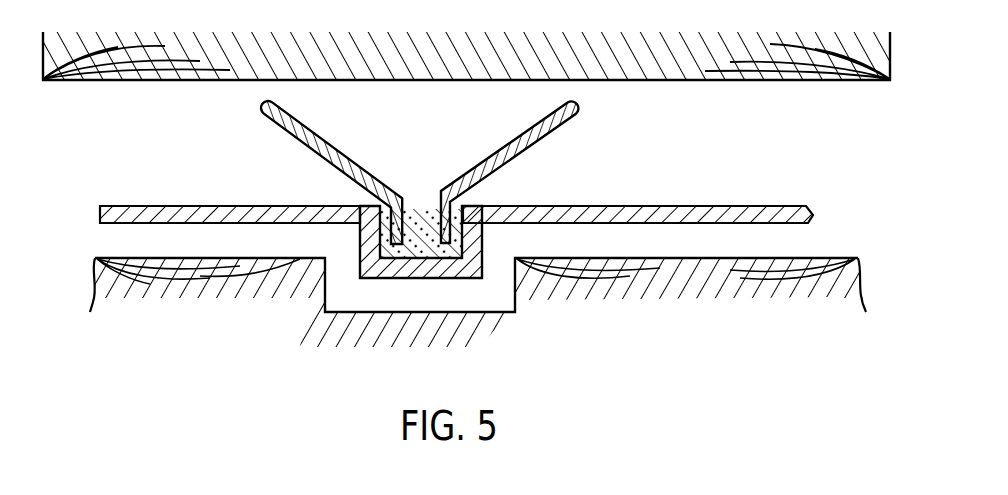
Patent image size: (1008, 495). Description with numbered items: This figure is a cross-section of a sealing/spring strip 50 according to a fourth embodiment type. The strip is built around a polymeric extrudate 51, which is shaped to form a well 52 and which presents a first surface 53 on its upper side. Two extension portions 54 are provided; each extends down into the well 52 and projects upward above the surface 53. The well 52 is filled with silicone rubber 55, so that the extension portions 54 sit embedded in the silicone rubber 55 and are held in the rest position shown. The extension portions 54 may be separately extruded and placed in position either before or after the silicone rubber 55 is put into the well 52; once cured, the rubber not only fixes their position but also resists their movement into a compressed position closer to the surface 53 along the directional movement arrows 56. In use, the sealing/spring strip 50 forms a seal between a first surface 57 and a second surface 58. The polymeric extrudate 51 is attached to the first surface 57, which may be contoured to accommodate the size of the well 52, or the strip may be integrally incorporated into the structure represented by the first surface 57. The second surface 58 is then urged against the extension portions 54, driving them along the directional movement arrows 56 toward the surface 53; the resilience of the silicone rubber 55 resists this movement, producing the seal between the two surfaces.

The sealing/spring strip 50 is at (714, 160).
The polymeric extrudate 51 is at (748, 194).
The well 52 is at (414, 196).
The first surface 53 is at (633, 206).
The extension portions 54 is at (301, 124).
The silicone rubber 55 is at (415, 256).
The directional movement arrows 56 is at (272, 127).
The first surface 57 is at (831, 257).
The second surface 58 is at (793, 80).